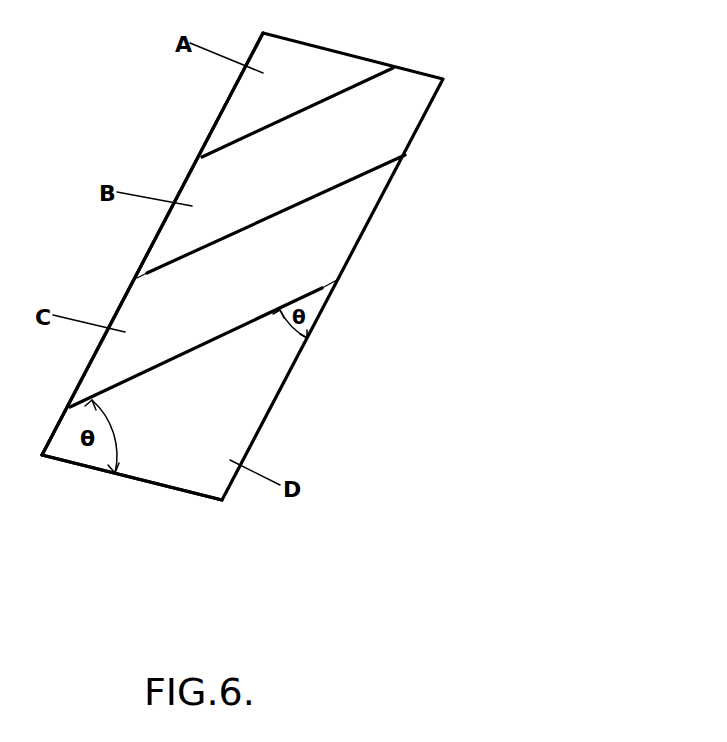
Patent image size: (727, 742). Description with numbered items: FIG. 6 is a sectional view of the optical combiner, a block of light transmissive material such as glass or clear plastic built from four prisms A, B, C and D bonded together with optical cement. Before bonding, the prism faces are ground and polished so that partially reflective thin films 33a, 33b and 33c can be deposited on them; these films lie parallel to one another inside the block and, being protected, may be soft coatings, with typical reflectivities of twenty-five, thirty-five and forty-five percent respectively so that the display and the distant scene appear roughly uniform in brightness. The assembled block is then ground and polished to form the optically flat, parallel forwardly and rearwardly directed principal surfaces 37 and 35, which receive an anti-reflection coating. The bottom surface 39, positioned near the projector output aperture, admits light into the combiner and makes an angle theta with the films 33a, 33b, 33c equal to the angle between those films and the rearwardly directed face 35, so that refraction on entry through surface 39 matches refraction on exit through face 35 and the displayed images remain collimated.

The thin film 33a is at (213, 340).
The thin film 33b is at (307, 202).
The thin film 33c is at (358, 86).
The rearwardly directed face 35 is at (343, 270).
The forwardly directed principal surface 37 is at (150, 249).
The bottom surface 39 is at (167, 490).